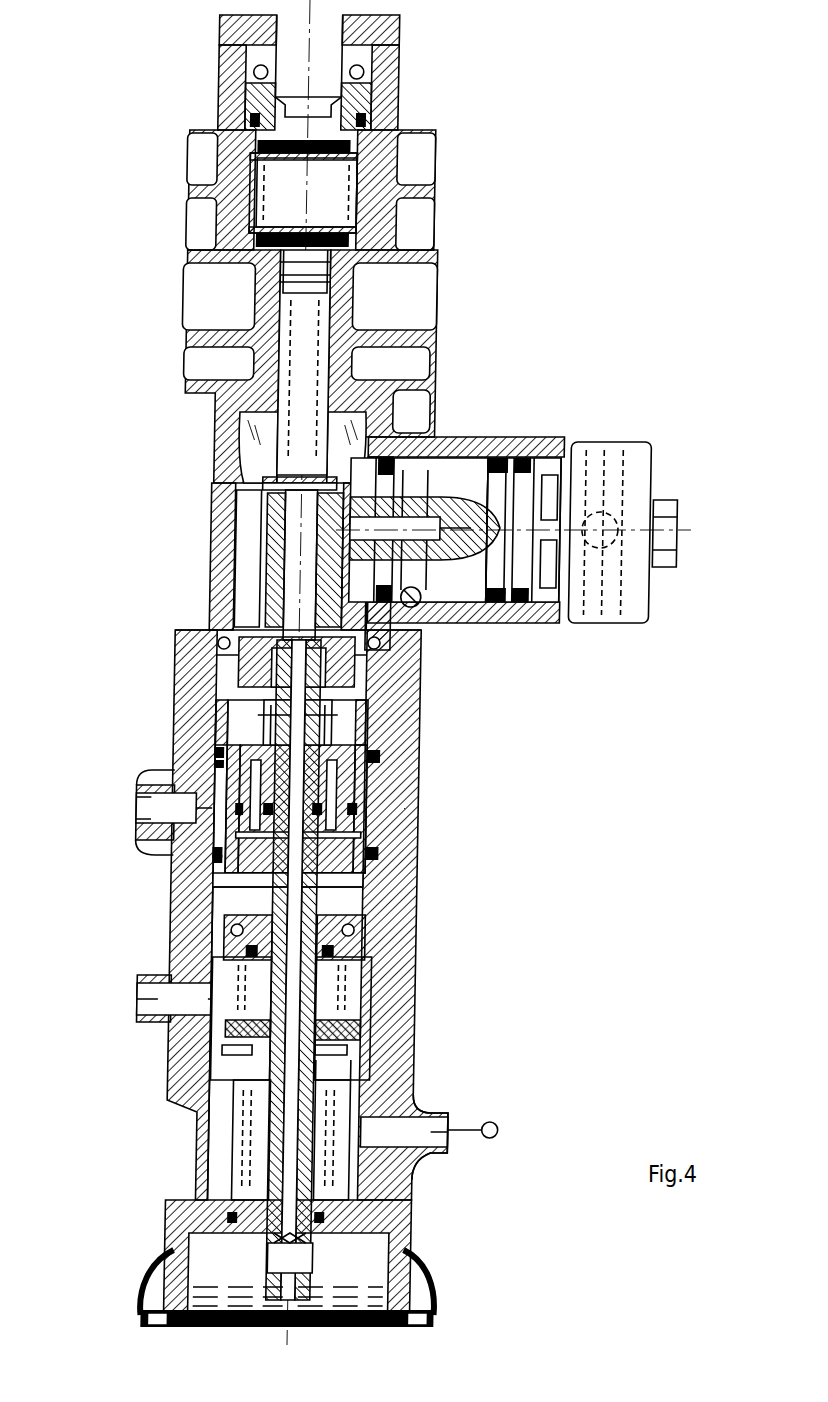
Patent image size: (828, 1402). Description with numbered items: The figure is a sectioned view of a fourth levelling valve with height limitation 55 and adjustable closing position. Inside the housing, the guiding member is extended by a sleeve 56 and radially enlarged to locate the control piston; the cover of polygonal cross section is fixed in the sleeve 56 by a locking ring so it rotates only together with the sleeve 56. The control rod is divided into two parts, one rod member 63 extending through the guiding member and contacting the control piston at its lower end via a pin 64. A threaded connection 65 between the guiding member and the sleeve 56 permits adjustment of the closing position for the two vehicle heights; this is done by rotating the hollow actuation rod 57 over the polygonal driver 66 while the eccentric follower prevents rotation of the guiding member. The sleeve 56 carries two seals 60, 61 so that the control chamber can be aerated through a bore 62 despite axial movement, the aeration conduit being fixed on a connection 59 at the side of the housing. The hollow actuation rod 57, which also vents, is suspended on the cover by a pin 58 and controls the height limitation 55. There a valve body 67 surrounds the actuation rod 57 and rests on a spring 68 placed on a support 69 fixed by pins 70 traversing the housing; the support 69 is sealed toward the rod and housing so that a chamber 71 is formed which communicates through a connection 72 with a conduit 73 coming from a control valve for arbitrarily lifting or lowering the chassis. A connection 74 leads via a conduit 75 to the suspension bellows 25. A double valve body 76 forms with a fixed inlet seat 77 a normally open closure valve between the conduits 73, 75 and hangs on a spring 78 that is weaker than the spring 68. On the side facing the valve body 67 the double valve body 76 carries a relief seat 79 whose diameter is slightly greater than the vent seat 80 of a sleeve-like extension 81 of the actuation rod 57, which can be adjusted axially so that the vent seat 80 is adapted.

The suspension bellows 25 is at (519, 1128).
The height limitation 55 is at (456, 965).
The sleeve 56 is at (227, 717).
The actuation rod 57 is at (375, 884).
The pin 58 is at (351, 828).
The connection 59 is at (151, 798).
The seal 60 is at (235, 873).
The seal 61 is at (231, 753).
The bore 62 is at (230, 852).
The rod member 63 is at (302, 547).
The pin 64 is at (282, 680).
The threaded connection 65 is at (285, 597).
The polygonal driver 66 is at (311, 1242).
The valve body 67 is at (373, 1030).
The spring 68 is at (347, 1010).
The support 69 is at (364, 932).
The pins 70 is at (253, 930).
The chamber 71 is at (242, 1007).
The connection 72 is at (207, 1015).
The conduit 73 is at (167, 995).
The connection 74 is at (419, 1130).
The conduit 75 is at (459, 1120).
The double valve body 76 is at (345, 1070).
The inlet seat 77 is at (382, 1087).
The spring 78 is at (367, 1193).
The relief seat 79 is at (258, 1050).
The vent seat 80 is at (275, 1042).
The sleeve-like extension 81 is at (330, 1187).